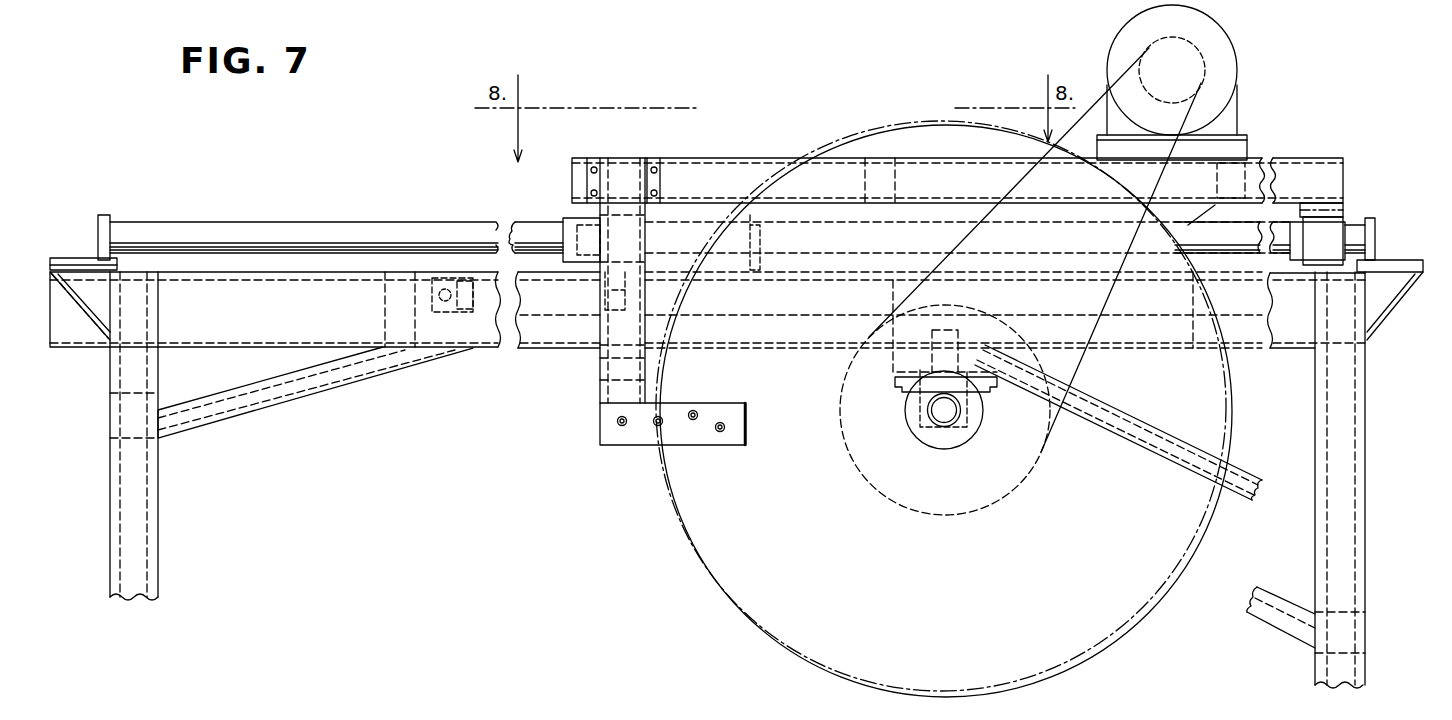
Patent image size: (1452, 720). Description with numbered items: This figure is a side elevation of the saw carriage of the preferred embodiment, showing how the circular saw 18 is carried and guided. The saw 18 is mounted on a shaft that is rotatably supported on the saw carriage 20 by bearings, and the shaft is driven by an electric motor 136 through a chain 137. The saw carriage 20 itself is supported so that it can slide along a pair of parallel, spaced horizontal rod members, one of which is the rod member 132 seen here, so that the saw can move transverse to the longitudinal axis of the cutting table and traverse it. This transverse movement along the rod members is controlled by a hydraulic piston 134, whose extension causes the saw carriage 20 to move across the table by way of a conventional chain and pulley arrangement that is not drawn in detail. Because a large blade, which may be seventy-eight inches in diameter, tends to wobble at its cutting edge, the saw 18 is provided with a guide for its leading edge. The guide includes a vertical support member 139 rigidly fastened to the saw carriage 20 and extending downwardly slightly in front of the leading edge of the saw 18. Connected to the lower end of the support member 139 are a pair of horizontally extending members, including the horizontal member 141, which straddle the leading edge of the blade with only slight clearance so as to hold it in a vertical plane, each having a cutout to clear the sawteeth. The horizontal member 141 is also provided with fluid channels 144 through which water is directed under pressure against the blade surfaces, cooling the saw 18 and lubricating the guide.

The saw 18 is at (978, 596).
The saw carriage 20 is at (744, 153).
The horizontal rod member 132 is at (299, 220).
The hydraulic piston 134 is at (569, 312).
The electric motor 136 is at (1234, 78).
The chain 137 is at (1014, 192).
The vertical support member 139 is at (600, 378).
The horizontally extending member 141 is at (704, 436).
The fluid channels 144 is at (719, 422).